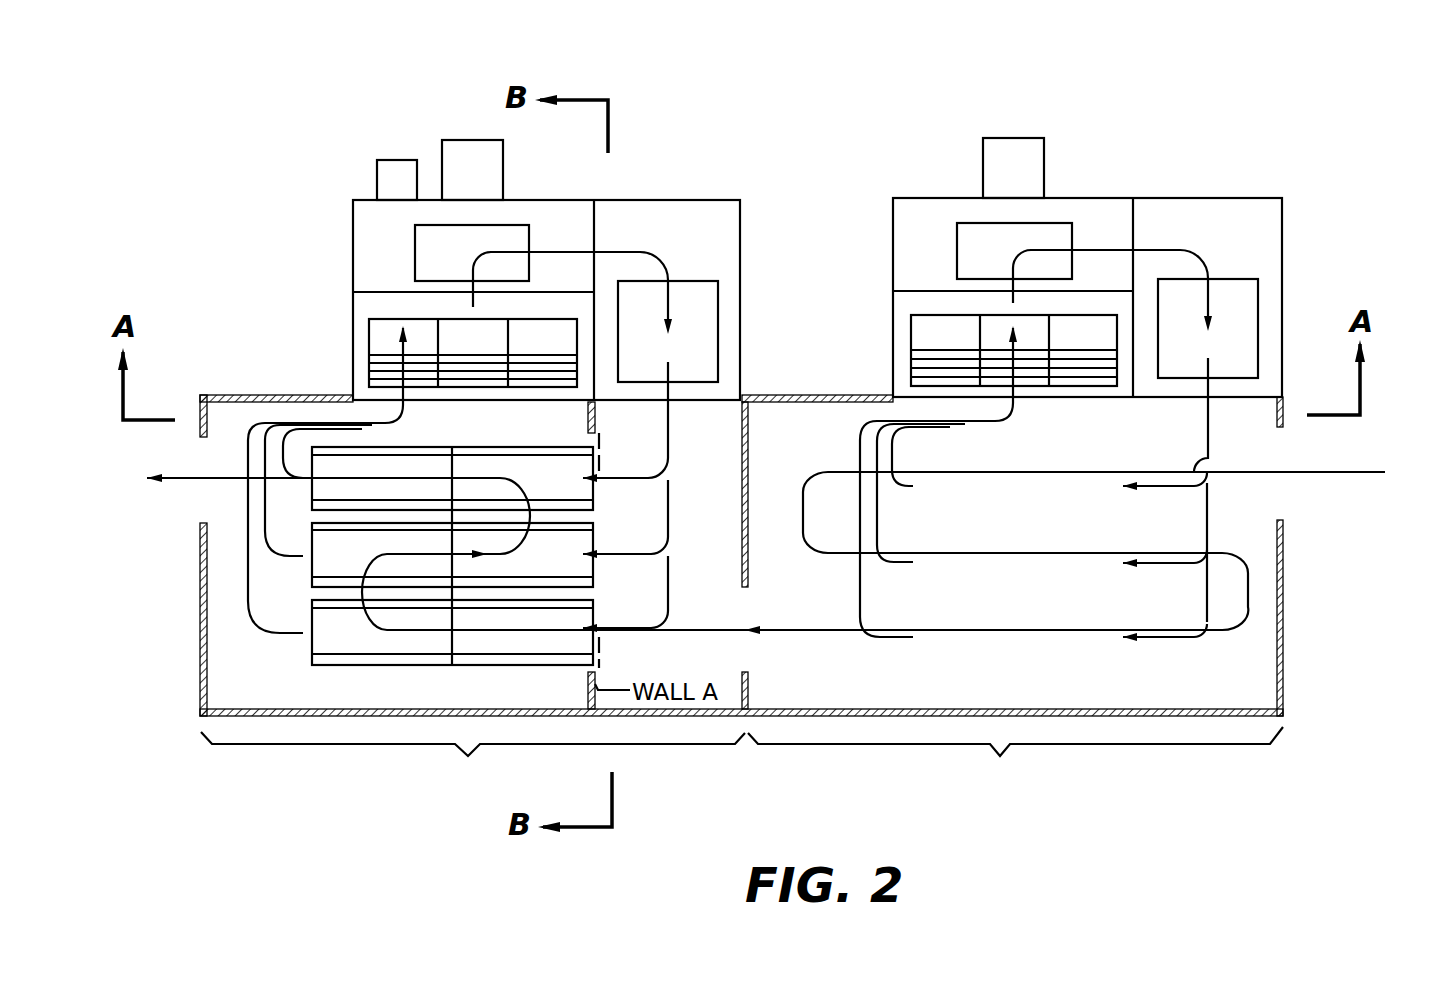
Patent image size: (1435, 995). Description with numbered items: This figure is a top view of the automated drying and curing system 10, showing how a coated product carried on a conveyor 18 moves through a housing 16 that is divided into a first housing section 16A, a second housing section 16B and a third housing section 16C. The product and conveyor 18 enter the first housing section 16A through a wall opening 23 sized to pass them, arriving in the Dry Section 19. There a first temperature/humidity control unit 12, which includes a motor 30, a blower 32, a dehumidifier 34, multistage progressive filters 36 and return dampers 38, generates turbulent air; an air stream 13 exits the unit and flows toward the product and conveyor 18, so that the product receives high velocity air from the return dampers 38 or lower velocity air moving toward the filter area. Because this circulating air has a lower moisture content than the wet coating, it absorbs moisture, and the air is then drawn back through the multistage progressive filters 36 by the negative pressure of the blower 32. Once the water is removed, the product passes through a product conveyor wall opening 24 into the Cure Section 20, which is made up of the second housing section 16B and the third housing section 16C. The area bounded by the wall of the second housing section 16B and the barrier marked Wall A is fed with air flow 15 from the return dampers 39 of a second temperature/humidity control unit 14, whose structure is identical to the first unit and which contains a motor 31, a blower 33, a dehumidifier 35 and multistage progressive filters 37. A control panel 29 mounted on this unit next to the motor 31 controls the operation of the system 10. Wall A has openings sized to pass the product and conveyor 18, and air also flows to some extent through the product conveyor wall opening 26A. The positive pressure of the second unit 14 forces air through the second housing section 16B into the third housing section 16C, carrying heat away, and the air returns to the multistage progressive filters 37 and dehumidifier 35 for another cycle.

The automated drying and curing system 10 is at (336, 104).
The first temperature/humidity control unit 12 is at (1304, 260).
The air stream 13 is at (1182, 250).
The second temperature/humidity control unit 14 is at (314, 181).
The air flow 15 is at (637, 250).
The housing 16 is at (1282, 614).
The first housing section 16A is at (1045, 684).
The second housing section 16B is at (727, 664).
The third housing section 16C is at (420, 697).
The conveyor 18 is at (217, 482).
The Dry Section 19 is at (1015, 760).
The Cure Section 20 is at (473, 762).
The wall opening 23 is at (1281, 432).
The product conveyor wall opening 24 is at (742, 650).
The product conveyor wall opening 26A is at (590, 665).
The control panel 29 is at (405, 180).
The motor 30 is at (1025, 170).
The motor 31 is at (482, 172).
The blower 32 is at (970, 240).
The blower 33 is at (435, 250).
The dehumidifier 34 is at (1232, 290).
The dehumidifier 35 is at (705, 313).
The multistage progressive filters 36 is at (930, 368).
The multistage progressive filters 37 is at (378, 368).
The return dampers 38 is at (1238, 400).
The return dampers 39 is at (702, 400).